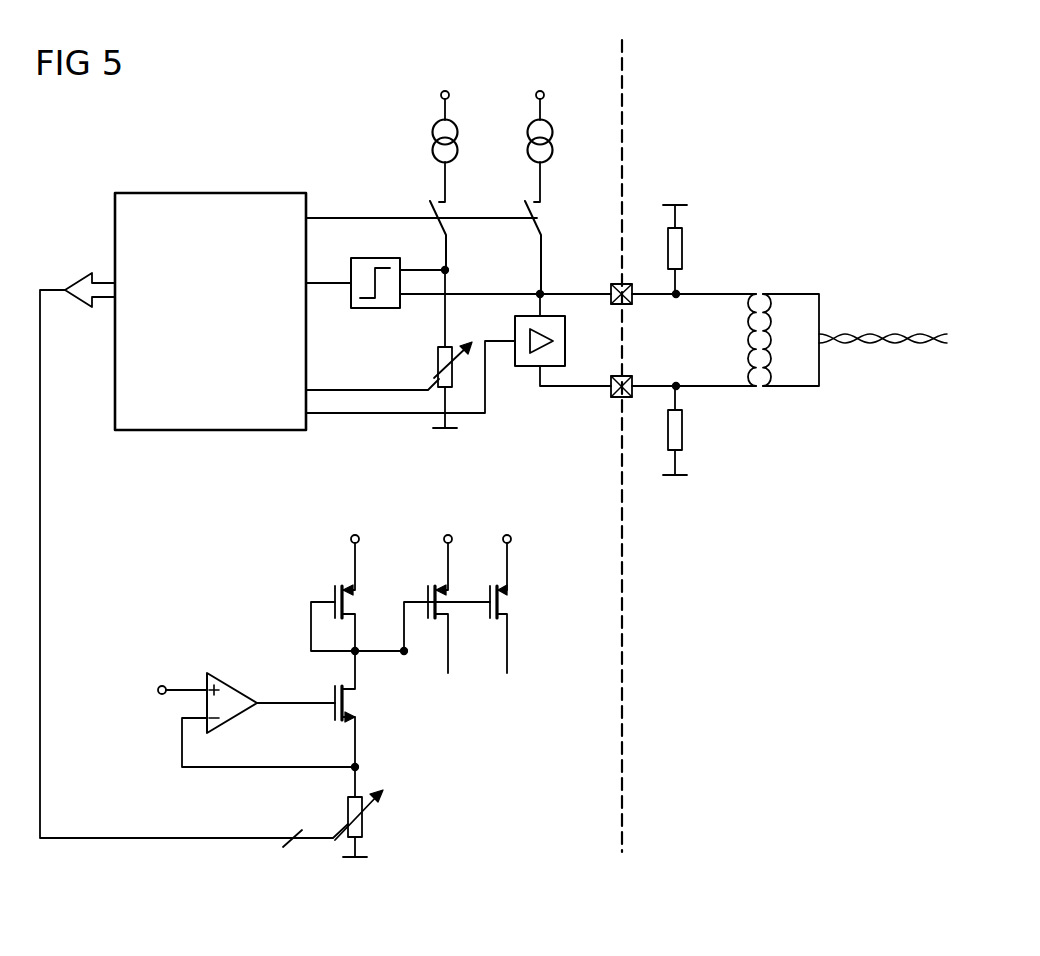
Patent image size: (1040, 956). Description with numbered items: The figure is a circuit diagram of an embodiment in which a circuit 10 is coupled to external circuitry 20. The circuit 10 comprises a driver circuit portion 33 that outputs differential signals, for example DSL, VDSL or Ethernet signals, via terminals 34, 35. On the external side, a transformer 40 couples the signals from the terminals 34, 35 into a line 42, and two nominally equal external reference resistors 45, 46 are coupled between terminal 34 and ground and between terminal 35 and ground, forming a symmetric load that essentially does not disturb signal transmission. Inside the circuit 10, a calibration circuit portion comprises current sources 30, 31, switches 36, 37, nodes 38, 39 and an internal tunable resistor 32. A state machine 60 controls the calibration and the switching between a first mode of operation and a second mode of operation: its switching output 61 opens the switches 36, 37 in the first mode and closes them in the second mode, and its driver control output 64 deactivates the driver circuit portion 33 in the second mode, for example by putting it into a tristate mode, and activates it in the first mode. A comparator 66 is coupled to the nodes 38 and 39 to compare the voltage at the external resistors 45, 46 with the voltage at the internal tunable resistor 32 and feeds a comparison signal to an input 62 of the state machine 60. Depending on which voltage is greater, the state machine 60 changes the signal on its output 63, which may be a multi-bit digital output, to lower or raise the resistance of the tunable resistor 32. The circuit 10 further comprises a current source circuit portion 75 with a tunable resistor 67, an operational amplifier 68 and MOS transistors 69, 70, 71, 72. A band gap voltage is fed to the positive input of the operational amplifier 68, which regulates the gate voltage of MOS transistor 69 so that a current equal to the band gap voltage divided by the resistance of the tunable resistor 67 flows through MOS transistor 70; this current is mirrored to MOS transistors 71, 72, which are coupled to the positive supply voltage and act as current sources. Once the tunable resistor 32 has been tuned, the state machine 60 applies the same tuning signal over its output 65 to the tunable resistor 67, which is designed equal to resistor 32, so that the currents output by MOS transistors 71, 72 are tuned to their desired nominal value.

The circuit 10 is at (262, 70).
The external circuitry 20 is at (745, 66).
The current source 30 is at (431, 133).
The current source 31 is at (556, 133).
The tunable resistor 32 is at (438, 368).
The driver circuit portion 33 is at (566, 340).
The terminal 34 is at (625, 283).
The terminal 35 is at (613, 399).
The switch 36 is at (545, 222).
The switch 37 is at (427, 204).
The node 38 is at (543, 291).
The node 39 is at (448, 269).
The transformer 40 is at (760, 292).
The line 42 is at (920, 330).
The external reference resistor 45 is at (683, 250).
The external reference resistor 46 is at (683, 432).
The state machine 60 is at (209, 193).
The switching output 61 is at (306, 212).
The input 62 is at (306, 283).
The output 63 is at (306, 390).
The driver control output 64 is at (306, 420).
The output 65 is at (117, 290).
The comparator 66 is at (368, 310).
The tunable resistor 67 is at (363, 825).
The operational amplifier 68 is at (232, 681).
The MOS transistor 69 is at (349, 690).
The MOS transistor 70 is at (333, 582).
The MOS transistor 71 is at (427, 582).
The MOS transistor 72 is at (498, 608).
The current source circuit portion 75 is at (195, 628).